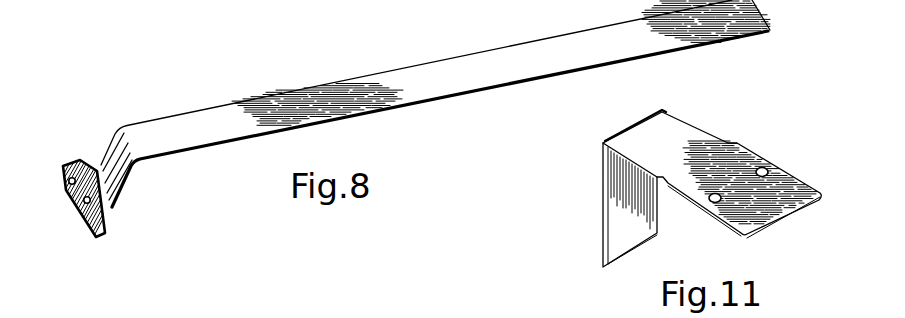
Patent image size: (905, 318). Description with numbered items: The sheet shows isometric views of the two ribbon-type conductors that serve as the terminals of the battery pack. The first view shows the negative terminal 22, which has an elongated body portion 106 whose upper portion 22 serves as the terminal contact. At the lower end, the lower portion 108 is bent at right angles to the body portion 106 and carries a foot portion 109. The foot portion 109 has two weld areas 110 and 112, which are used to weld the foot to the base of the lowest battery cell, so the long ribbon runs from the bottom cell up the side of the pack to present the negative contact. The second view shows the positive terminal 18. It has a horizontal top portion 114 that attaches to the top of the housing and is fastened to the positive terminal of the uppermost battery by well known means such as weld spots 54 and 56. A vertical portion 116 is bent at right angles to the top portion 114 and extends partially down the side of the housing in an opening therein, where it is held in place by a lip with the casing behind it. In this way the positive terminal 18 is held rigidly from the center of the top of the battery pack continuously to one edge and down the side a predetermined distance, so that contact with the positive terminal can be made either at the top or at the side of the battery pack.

In FIG. 8, the elongated body portion 106 is at (439, 105).
In FIG. 8, the negative terminal 22 is at (751, 36).
In FIG. 8, the lower portion 108 is at (118, 203).
In FIG. 8, the weld area 110 is at (67, 198).
In FIG. 8, the foot portion 109 is at (67, 177).
In FIG. 8, the weld area 112 is at (87, 205).
In FIG. 11, the positive terminal 18 is at (669, 180).
In FIG. 11, the top portion 114 is at (680, 135).
In FIG. 11, the vertical portion 116 is at (618, 208).
In FIG. 11, the weld spot 54 is at (762, 167).
In FIG. 11, the weld spot 56 is at (709, 199).